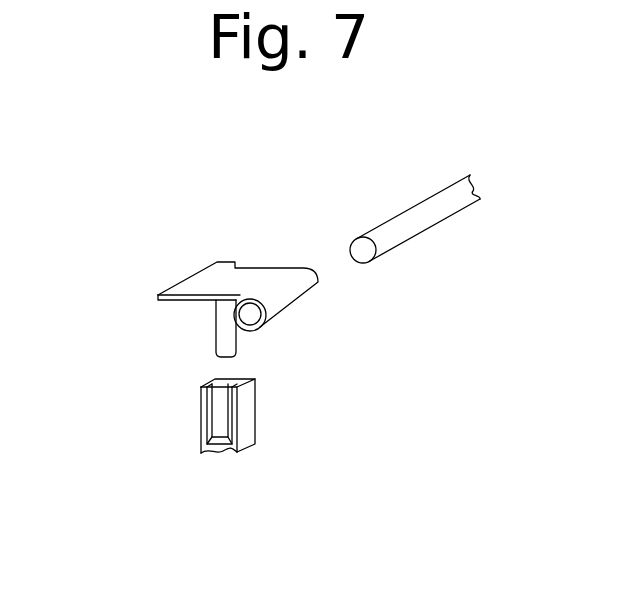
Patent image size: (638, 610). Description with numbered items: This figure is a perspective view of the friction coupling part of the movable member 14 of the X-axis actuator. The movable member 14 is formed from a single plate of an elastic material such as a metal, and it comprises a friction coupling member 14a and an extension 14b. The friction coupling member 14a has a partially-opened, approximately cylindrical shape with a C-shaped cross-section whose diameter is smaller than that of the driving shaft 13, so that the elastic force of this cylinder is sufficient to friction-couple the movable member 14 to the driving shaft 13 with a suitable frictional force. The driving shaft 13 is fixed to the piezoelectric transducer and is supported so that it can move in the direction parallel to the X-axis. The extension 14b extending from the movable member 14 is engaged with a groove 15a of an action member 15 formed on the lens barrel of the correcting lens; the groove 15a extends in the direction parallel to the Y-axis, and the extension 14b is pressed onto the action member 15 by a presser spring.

The driving shaft 13 is at (408, 240).
The movable member 14 is at (267, 280).
The friction coupling member 14a is at (262, 330).
The extension 14b is at (214, 352).
The action member 15 is at (248, 424).
The groove 15a is at (223, 425).